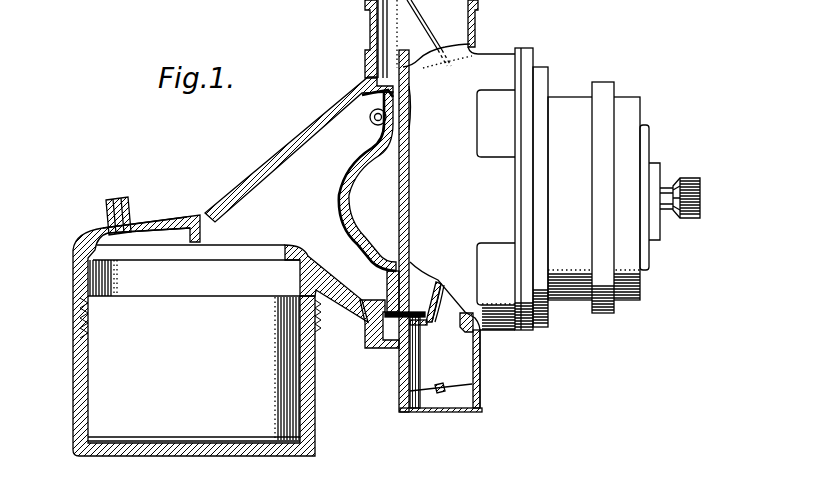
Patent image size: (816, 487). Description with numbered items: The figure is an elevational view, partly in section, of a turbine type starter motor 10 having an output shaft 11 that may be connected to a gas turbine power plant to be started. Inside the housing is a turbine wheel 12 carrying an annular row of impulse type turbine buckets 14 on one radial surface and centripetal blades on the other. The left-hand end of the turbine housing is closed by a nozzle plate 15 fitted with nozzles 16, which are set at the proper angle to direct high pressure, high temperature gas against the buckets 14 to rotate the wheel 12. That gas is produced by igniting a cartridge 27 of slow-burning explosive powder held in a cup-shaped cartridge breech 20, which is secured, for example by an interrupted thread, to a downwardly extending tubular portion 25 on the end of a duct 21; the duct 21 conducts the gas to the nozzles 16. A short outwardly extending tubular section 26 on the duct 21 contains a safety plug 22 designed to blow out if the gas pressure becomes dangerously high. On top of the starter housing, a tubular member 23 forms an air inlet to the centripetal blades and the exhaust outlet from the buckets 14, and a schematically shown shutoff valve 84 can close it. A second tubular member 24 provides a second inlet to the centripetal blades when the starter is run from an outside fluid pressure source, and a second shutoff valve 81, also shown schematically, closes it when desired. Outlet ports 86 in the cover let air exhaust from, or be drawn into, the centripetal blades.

The starter motor 10 is at (538, 54).
The output shaft 11 is at (683, 220).
The turbine wheel 12 is at (406, 196).
The impulse type turbine buckets 14 is at (407, 100).
The nozzle plate 15 is at (337, 191).
The nozzles 16 is at (370, 117).
The cartridge breech 20 is at (76, 382).
The duct 21 is at (314, 122).
The safety plug 22 is at (106, 229).
The tubular member 23 is at (369, 32).
The second tubular member 24 is at (470, 369).
The tubular portion 25 is at (75, 298).
The tubular section 26 is at (117, 203).
The cartridge 27 is at (205, 384).
The second shutoff valve 81 is at (448, 365).
The shutoff valve 84 is at (426, 28).
The outlet ports 86 is at (477, 125).